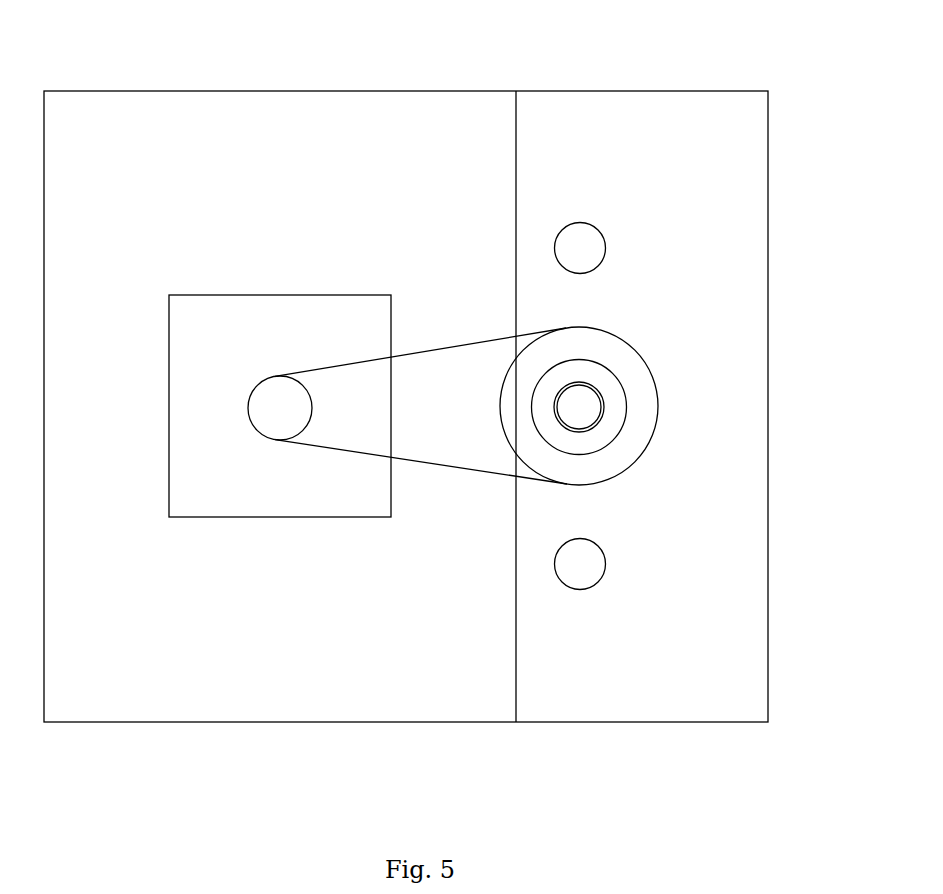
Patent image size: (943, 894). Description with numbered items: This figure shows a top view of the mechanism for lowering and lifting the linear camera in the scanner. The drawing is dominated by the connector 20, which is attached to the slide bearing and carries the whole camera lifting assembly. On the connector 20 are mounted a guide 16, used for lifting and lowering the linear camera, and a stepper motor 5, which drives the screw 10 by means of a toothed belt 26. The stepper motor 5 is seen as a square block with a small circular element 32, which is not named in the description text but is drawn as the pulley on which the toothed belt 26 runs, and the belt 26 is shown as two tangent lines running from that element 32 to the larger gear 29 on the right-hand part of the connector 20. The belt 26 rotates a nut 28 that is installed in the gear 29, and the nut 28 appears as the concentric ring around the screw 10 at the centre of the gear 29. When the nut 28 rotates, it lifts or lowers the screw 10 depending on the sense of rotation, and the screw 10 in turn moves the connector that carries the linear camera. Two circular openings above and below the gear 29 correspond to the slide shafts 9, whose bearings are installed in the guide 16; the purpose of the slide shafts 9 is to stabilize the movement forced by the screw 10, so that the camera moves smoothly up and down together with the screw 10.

The connector 20 is at (406, 368).
The guide 16 is at (668, 368).
The stepper motor 5 is at (280, 265).
The drive pulley 32 is at (352, 227).
The toothed belt 26 is at (432, 249).
The gear 29 is at (682, 449).
The nut 28 is at (699, 414).
The screw 10 is at (709, 447).
The slide shafts 9 is at (705, 342).